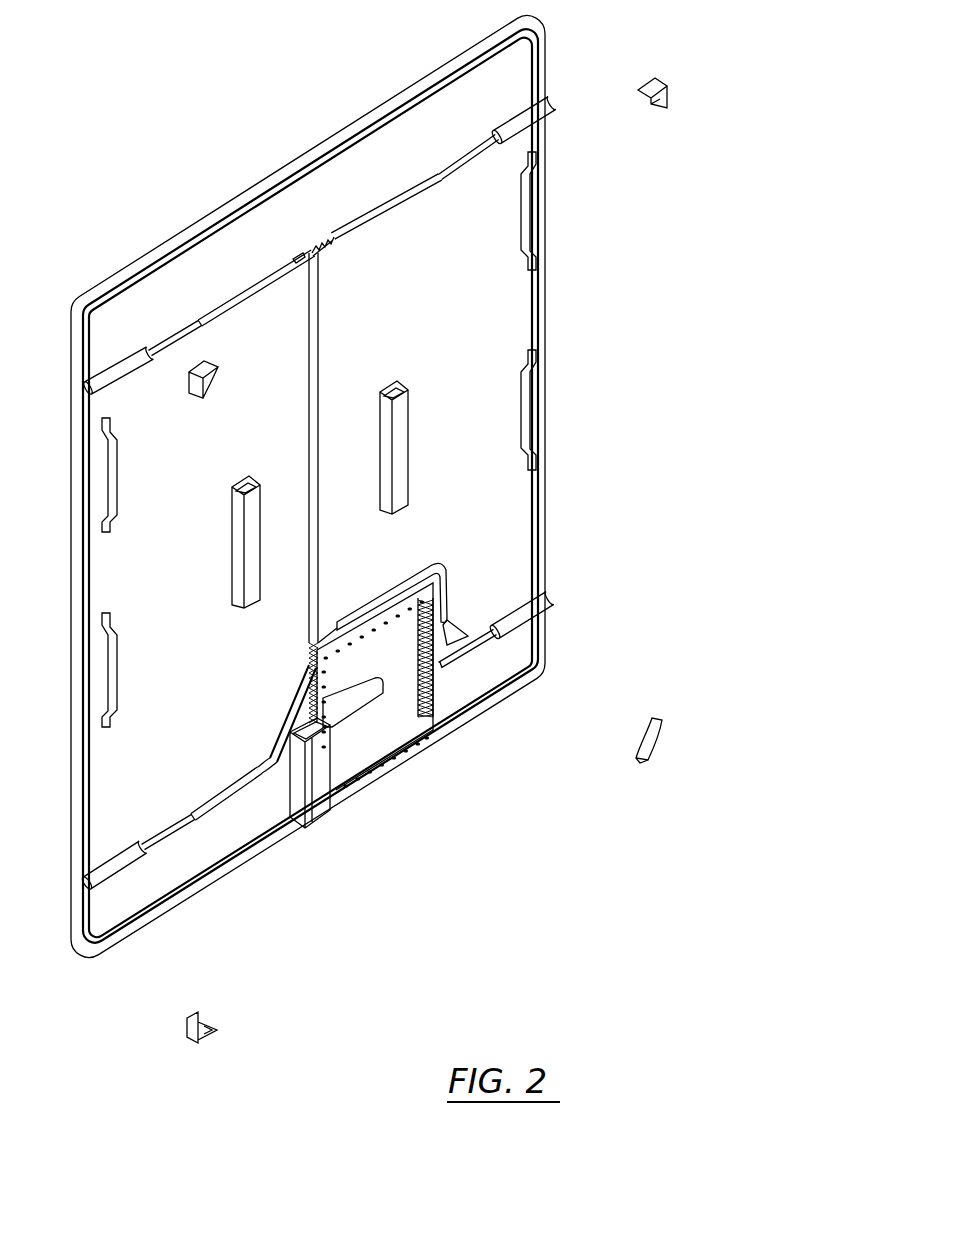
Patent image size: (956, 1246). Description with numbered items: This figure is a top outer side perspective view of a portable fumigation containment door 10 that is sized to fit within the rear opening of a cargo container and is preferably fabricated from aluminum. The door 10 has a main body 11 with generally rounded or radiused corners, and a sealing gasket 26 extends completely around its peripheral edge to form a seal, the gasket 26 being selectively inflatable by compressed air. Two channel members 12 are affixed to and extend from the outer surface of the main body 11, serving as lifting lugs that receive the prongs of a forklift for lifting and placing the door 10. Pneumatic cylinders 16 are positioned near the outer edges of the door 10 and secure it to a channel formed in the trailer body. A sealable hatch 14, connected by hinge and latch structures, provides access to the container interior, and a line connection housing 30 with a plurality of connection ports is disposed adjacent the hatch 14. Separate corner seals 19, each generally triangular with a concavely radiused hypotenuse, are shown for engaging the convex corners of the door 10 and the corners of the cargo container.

The portable fumigation containment door 10 is at (103, 102).
The main body 11 is at (227, 253).
The sealing gasket 26 is at (433, 72).
The pneumatic cylinders 16 is at (170, 338).
The channel members 12 is at (231, 534).
The sealable hatch 14 is at (395, 727).
The line connection housing 30 is at (344, 826).
The corner seals 19 is at (650, 82).